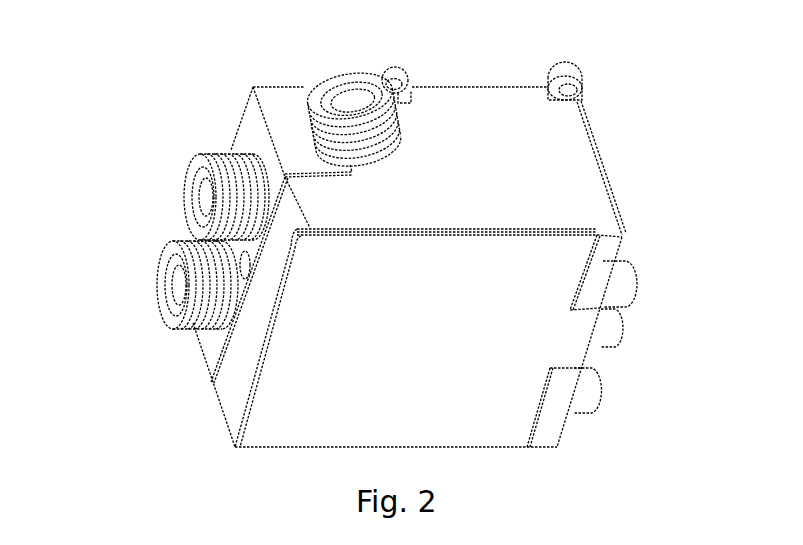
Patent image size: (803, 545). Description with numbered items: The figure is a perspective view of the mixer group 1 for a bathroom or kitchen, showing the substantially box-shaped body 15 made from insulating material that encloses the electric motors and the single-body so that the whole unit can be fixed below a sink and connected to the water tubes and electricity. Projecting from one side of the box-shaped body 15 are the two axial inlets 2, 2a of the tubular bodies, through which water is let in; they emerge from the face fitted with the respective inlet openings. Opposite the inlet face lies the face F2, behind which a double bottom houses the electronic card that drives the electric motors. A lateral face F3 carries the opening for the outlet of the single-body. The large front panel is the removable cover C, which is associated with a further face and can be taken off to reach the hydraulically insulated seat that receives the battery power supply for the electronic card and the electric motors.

The mixer group 1 is at (180, 84).
The axial inlet 2 is at (158, 288).
The axial inlet 2a is at (184, 200).
The box-shaped body 15 is at (418, 273).
The lateral face F3 is at (557, 158).
The opposite face F2 is at (639, 213).
The removable cover C is at (500, 263).